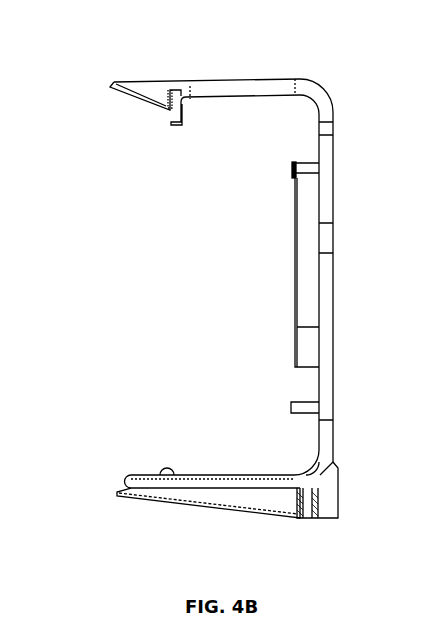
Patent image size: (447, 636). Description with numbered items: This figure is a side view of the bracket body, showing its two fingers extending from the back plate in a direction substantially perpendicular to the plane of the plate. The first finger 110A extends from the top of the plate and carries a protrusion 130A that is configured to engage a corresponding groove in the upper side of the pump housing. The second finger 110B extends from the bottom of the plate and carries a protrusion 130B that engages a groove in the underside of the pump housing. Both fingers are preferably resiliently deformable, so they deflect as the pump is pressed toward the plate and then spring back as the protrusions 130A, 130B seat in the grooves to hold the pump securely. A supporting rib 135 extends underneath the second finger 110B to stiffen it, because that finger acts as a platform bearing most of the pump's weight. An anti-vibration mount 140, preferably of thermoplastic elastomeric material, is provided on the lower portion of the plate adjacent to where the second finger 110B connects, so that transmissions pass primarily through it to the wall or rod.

The first finger 110A is at (242, 82).
The protrusion 130A is at (174, 120).
The second finger 110B is at (125, 480).
The protrusion 130B is at (165, 465).
The supporting rib 135 is at (245, 507).
The anti-vibration mount 140 is at (333, 507).